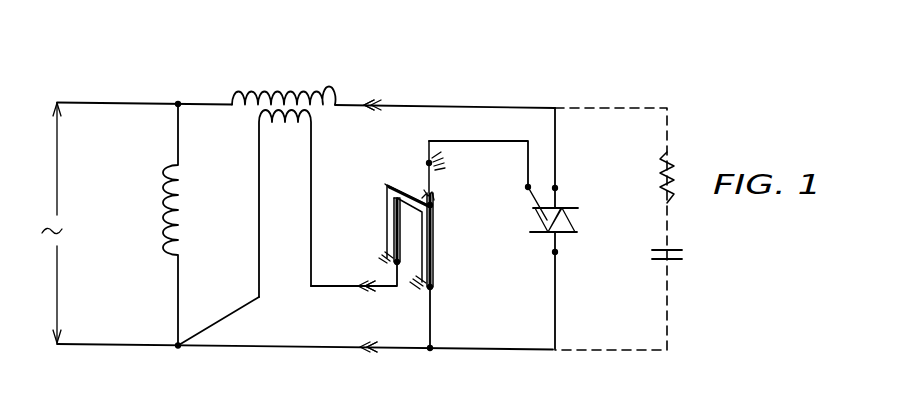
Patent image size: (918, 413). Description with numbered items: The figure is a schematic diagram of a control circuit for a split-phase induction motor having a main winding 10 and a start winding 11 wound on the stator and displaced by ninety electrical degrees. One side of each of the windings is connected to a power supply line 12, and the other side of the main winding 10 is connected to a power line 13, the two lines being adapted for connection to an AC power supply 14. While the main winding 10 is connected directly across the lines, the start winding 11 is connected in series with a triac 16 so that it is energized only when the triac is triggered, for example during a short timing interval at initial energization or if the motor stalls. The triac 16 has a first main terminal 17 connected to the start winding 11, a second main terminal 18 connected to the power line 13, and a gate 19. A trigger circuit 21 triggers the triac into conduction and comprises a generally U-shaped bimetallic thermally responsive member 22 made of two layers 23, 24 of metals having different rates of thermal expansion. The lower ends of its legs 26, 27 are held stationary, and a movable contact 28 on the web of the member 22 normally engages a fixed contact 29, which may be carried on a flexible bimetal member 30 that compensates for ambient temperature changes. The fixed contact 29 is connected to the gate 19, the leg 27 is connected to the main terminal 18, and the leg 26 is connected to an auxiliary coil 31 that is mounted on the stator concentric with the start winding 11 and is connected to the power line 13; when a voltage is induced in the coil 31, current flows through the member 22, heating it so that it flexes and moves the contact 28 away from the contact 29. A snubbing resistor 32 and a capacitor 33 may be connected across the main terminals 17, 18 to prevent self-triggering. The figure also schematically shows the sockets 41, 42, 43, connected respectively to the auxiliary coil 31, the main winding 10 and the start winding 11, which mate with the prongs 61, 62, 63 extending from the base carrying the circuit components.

The main winding 10 is at (170, 230).
The start winding 11 is at (279, 93).
The power supply line 12 is at (100, 103).
The power line 13 is at (79, 345).
The AC power supply 14 is at (72, 223).
The triac 16 is at (590, 223).
The first main terminal 17 is at (556, 187).
The second main terminal 18 is at (556, 253).
The gate 19 is at (527, 186).
The trigger circuit 21 is at (419, 236).
The bimetallic thermally responsive member 22 is at (379, 218).
The layer of metal 23 is at (387, 186).
The layer of metal 24 is at (396, 196).
The leg 26 is at (392, 238).
The leg 27 is at (434, 254).
The movable contact 28 is at (418, 193).
The fixed contact 29 is at (434, 207).
The flexible bimetal member 30 is at (438, 185).
The auxiliary coil 31 is at (305, 121).
The snubbing resistor 32 is at (672, 198).
The capacitor 33 is at (684, 256).
The socket 41 is at (357, 289).
The socket 42 is at (359, 350).
The socket 43 is at (368, 102).
The prong 61 is at (370, 292).
The prong 62 is at (370, 354).
The prong 63 is at (372, 106).